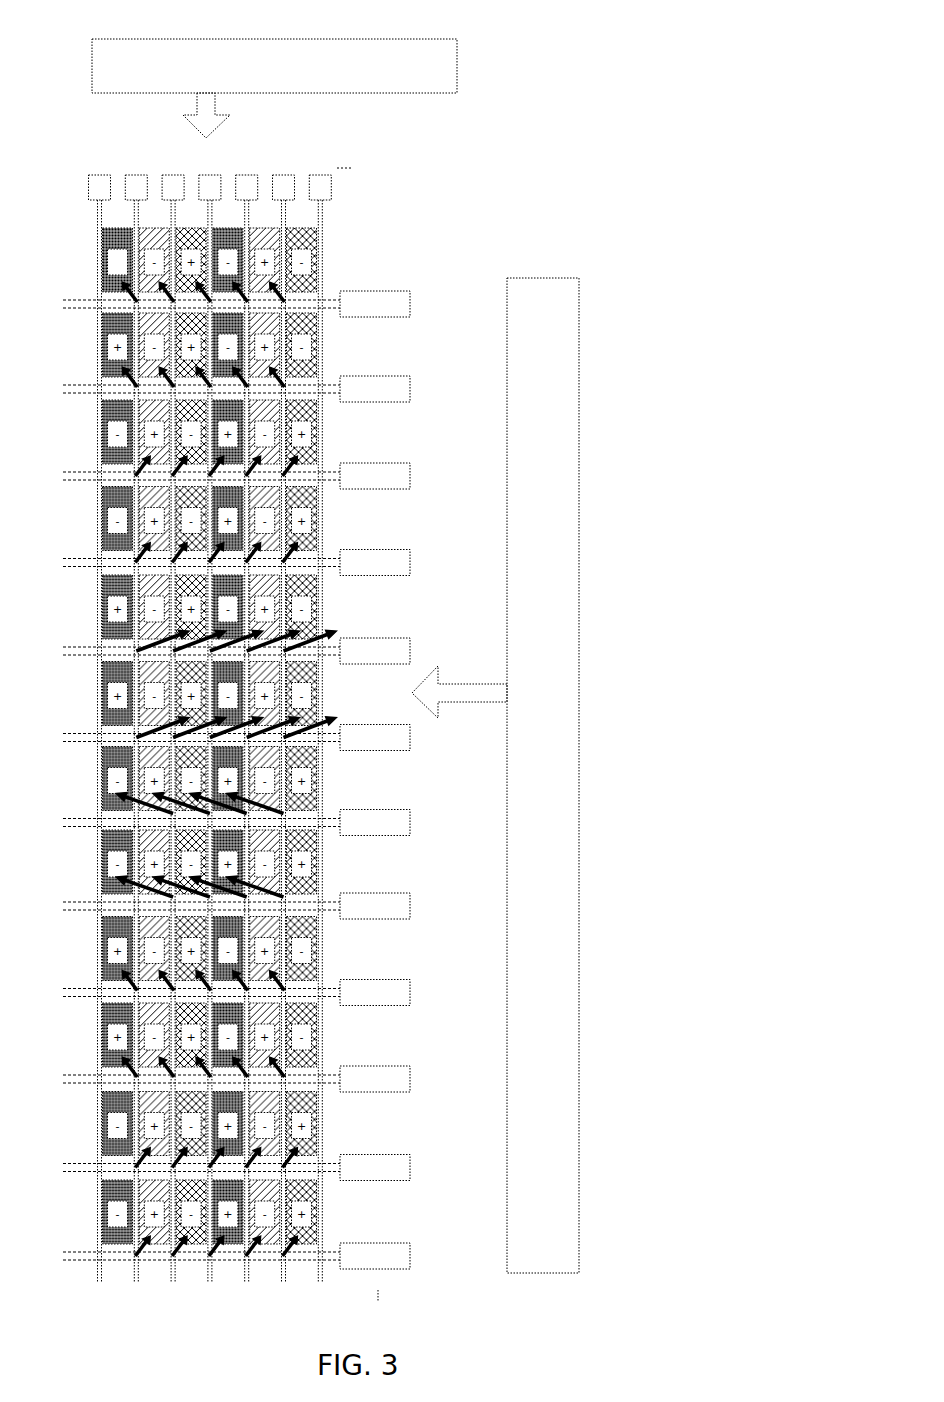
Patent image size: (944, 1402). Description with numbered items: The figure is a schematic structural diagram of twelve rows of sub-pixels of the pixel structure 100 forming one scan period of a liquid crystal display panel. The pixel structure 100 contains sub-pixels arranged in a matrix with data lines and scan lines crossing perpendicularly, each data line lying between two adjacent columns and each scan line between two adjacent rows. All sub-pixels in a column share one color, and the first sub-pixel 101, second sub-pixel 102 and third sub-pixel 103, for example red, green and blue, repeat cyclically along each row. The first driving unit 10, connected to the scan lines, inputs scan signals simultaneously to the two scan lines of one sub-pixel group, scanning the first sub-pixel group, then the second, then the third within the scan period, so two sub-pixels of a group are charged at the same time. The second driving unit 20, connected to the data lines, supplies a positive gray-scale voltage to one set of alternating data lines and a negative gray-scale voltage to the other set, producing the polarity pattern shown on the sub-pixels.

The first driving unit 10 is at (577, 362).
The second driving unit 20 is at (172, 38).
The pixel structure 100 is at (229, 726).
The first sub-pixel 101 is at (103, 233).
The second sub-pixel 102 is at (103, 240).
The third sub-pixel 103 is at (101, 277).